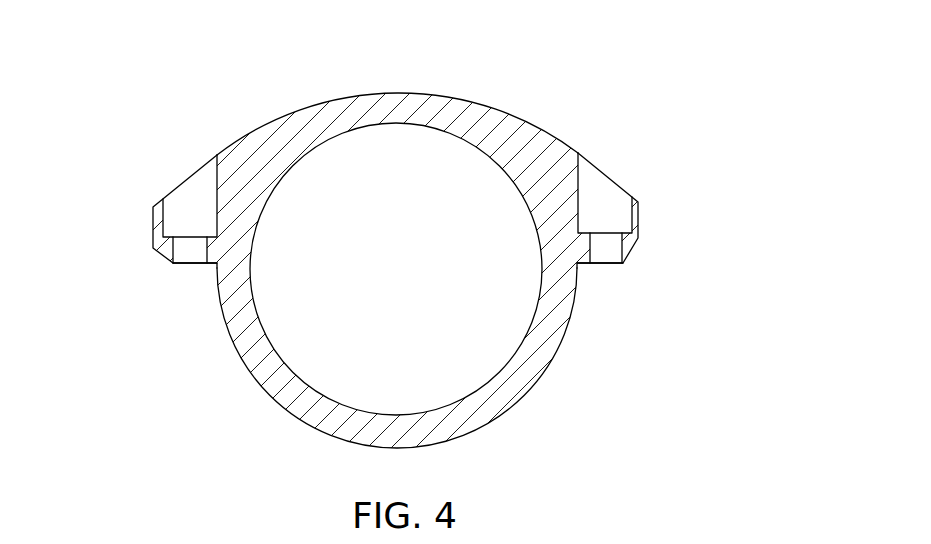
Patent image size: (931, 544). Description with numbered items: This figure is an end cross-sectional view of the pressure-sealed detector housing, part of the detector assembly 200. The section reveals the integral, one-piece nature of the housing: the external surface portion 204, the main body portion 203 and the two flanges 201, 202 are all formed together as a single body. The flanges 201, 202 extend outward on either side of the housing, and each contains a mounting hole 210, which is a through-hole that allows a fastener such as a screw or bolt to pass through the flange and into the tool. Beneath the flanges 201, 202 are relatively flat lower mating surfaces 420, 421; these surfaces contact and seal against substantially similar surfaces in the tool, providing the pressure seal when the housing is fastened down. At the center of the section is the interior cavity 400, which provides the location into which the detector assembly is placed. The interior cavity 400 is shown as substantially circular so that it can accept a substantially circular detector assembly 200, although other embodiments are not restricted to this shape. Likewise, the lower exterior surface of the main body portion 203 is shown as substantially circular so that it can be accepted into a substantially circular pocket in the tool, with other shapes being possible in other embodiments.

The detector assembly 200 is at (415, 249).
The flange 201 is at (640, 227).
The flange 202 is at (157, 233).
The main body portion 203 is at (452, 440).
The external surface portion 204 is at (535, 153).
The mounting hole 210 is at (605, 193).
The interior cavity 400 is at (500, 355).
The lower mating surface 420 is at (188, 290).
The lower mating surface 421 is at (600, 288).